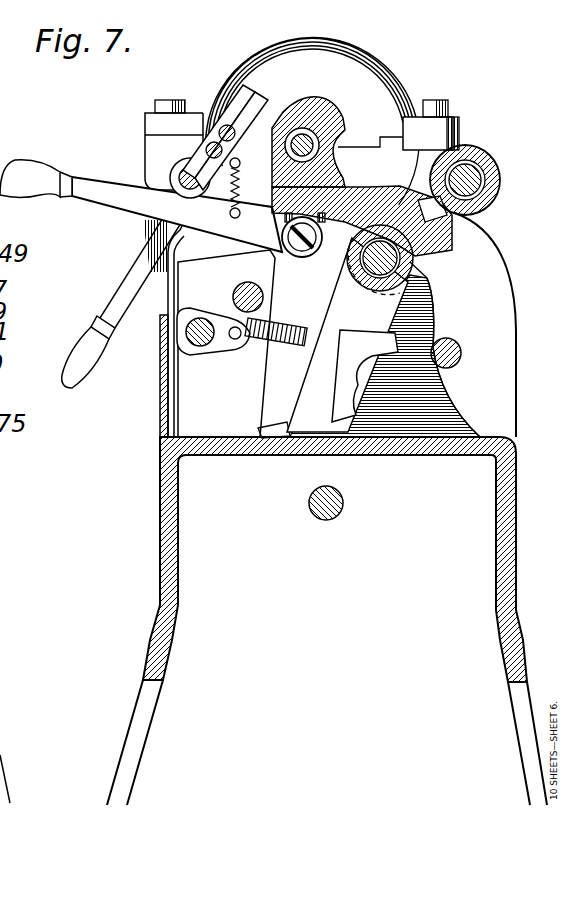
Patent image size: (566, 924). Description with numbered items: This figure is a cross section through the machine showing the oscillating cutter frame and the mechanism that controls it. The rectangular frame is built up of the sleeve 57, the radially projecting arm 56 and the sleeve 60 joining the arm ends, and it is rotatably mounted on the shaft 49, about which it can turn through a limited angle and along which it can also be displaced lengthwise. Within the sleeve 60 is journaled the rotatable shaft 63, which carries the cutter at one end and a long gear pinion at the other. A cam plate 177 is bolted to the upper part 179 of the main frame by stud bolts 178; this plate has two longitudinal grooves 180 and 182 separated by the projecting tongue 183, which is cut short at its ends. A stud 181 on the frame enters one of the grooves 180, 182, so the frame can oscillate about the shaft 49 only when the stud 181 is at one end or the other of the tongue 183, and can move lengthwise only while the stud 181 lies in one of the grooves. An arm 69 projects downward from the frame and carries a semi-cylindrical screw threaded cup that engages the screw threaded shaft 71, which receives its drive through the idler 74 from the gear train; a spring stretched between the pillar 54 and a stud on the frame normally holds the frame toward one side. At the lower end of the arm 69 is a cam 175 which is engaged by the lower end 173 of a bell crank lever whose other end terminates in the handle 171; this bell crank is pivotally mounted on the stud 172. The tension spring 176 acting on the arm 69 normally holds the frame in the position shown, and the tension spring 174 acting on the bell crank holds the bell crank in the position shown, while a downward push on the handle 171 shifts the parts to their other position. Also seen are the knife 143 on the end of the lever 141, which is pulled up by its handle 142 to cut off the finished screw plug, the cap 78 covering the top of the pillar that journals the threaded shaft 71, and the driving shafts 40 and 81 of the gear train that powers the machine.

The cap 78 is at (268, 45).
The knife 143 is at (243, 92).
The upper part of the frame 179 is at (236, 114).
The projecting tongue 183 is at (420, 180).
The rotatable shaft 63 is at (461, 165).
The sleeve 60 is at (483, 160).
The stud 181 is at (466, 218).
The radially projecting arm 56 is at (440, 225).
The sleeve 57 is at (426, 270).
The shaft 49 is at (425, 280).
The pillar 54 is at (426, 317).
The screw threaded shaft 71 is at (461, 353).
The arm 69 is at (365, 333).
The idler 74 is at (368, 385).
The longitudinal groove 182 is at (328, 265).
The longitudinal groove 180 is at (386, 197).
The cam plate 177 is at (200, 178).
The handle 171 is at (30, 180).
The tension spring 174 is at (253, 178).
The stud bolts 178 is at (288, 228).
The stud 172 is at (273, 250).
The shaft 81 is at (235, 293).
The lever 141 is at (140, 253).
The tension spring 176 is at (257, 343).
The handle 142 is at (70, 368).
The lower end of the bell crank lever 173 is at (270, 393).
The cam 175 is at (305, 410).
The shaft 40 is at (335, 520).